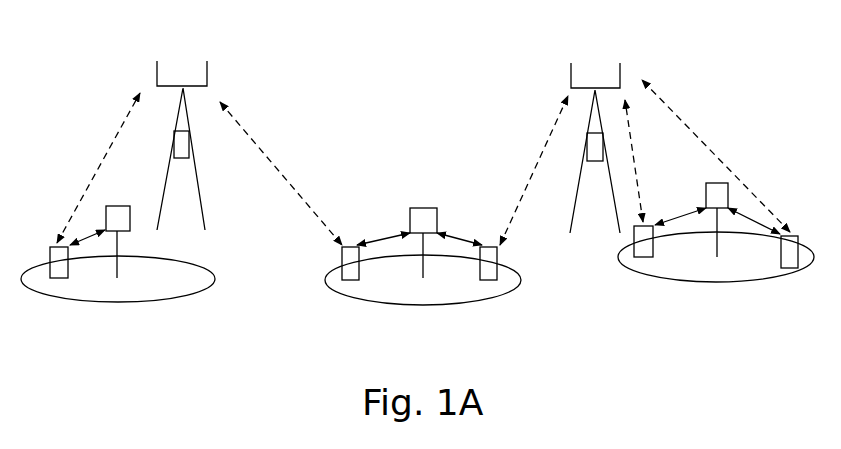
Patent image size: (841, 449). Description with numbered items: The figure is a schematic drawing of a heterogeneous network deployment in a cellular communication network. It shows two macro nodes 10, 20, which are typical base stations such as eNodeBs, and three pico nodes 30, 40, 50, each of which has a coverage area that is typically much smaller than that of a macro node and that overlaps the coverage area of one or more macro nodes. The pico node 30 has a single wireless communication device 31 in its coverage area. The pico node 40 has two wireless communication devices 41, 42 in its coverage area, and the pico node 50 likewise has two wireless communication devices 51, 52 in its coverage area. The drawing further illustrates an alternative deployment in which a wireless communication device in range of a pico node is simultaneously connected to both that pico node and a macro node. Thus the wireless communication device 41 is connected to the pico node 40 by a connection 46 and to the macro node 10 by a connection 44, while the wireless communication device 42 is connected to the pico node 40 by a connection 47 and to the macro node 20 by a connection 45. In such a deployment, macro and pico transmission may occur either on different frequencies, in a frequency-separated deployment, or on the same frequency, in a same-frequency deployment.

The macro node 10 is at (160, 82).
The macro node 20 is at (572, 83).
The pico node 30 is at (120, 206).
The wireless communication device 31 is at (68, 278).
The pico node 40 is at (437, 215).
The wireless communication device 41 is at (352, 280).
The wireless communication device 42 is at (495, 280).
The connection 44 is at (270, 158).
The connection 45 is at (537, 165).
The connection 46 is at (387, 232).
The connection 47 is at (466, 236).
The pico node 50 is at (706, 190).
The wireless communication device 51 is at (646, 257).
The wireless communication device 52 is at (795, 268).